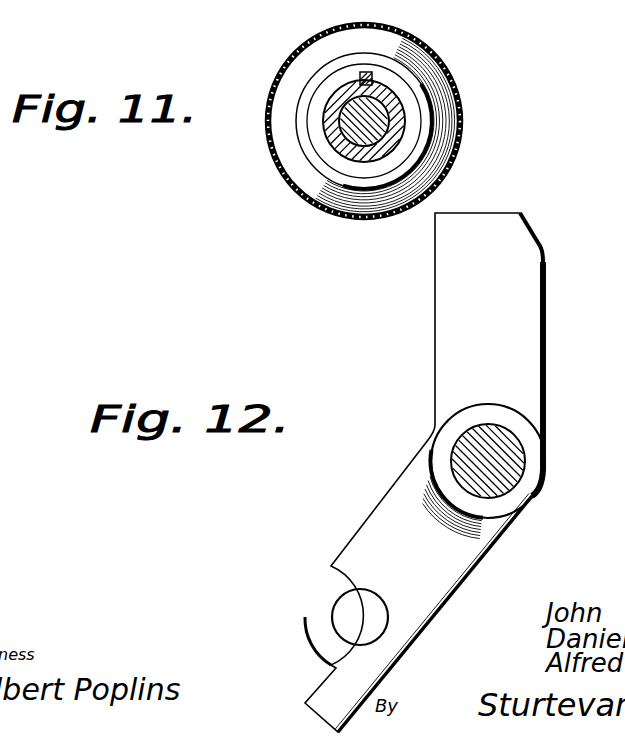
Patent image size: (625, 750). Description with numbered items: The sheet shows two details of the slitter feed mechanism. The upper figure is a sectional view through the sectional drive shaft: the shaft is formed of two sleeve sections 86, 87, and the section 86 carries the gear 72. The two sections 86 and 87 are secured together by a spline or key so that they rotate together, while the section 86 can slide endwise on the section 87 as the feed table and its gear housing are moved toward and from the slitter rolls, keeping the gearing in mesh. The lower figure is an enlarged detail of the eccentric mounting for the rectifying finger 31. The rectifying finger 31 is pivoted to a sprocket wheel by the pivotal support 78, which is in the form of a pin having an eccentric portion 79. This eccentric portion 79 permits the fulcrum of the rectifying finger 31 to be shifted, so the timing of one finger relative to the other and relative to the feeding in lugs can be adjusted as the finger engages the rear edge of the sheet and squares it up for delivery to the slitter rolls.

In FIG. 11, the gear 72 is at (457, 83).
In FIG. 11, the sleeve section 86 is at (396, 93).
In FIG. 11, the sleeve section 87 is at (392, 143).
In FIG. 12, the rectifying finger 31 is at (424, 472).
In FIG. 12, the pivotal support 78 is at (527, 463).
In FIG. 12, the eccentric portion 79 is at (453, 463).